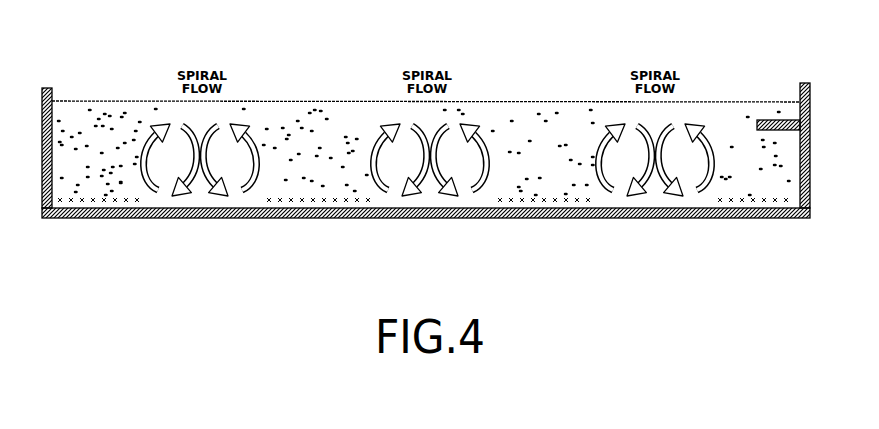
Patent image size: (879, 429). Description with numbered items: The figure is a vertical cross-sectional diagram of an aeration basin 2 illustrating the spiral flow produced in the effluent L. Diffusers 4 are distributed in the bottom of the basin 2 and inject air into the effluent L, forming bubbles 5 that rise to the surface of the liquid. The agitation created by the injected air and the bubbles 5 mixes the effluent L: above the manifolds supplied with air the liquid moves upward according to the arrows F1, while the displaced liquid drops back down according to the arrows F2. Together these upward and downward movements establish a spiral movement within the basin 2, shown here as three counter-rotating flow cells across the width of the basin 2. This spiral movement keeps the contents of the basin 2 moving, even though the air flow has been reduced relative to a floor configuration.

The basin 2 is at (800, 97).
The diffusers 4 is at (547, 210).
The bubbles 5 is at (312, 128).
The effluent L is at (573, 118).
The upflow arrows F1 is at (148, 167).
The downflow arrows F2 is at (197, 175).